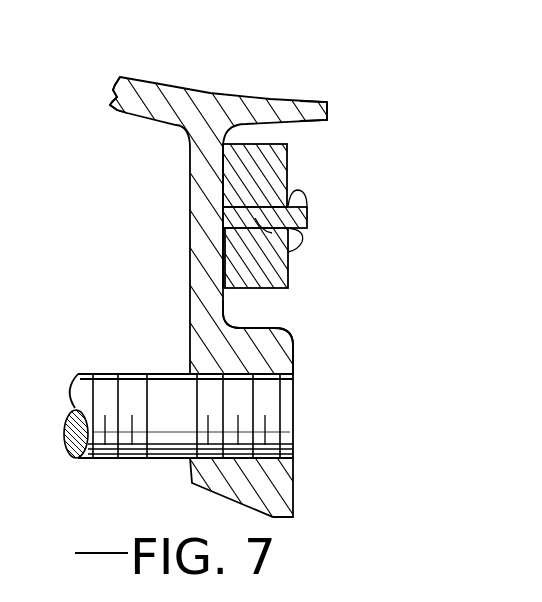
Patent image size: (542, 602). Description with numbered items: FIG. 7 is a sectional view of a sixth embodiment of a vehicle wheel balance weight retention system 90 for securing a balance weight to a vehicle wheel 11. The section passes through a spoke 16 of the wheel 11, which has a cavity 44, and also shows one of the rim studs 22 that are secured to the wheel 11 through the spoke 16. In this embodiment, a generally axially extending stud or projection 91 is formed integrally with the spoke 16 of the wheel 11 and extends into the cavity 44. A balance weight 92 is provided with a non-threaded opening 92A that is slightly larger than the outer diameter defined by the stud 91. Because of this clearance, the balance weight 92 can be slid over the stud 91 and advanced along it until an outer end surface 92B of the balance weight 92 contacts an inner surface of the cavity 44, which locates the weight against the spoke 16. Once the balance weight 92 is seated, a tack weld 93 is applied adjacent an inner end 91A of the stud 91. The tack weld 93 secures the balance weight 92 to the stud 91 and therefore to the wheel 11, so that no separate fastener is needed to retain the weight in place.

The wheel 11 is at (148, 72).
The spoke 16 is at (117, 104).
The vehicle wheel balance weight retention system 90 is at (343, 96).
The tack weld 93 is at (288, 198).
The inner end of the stud 91A is at (306, 210).
The stud 91 is at (247, 220).
The balance weight 92 is at (288, 280).
The non-threaded opening 92A is at (284, 240).
The outer end surface of the balance weight 92B is at (223, 272).
The cavity 44 is at (258, 309).
The rim stud 22 is at (147, 458).